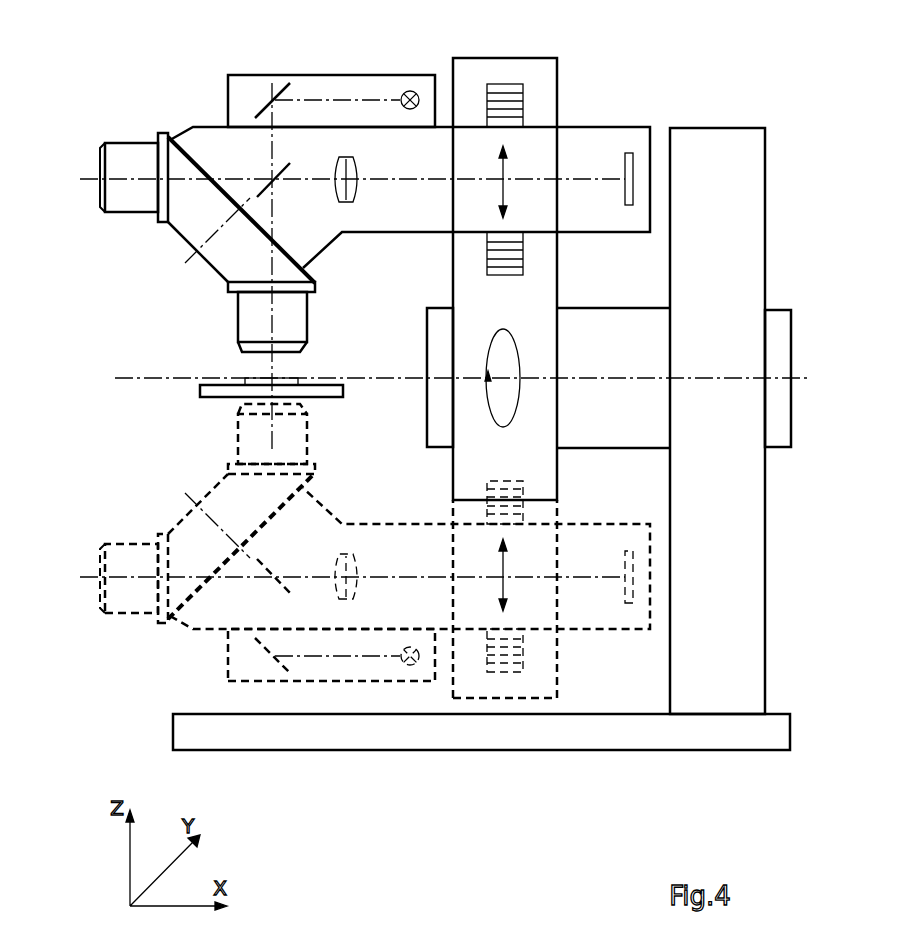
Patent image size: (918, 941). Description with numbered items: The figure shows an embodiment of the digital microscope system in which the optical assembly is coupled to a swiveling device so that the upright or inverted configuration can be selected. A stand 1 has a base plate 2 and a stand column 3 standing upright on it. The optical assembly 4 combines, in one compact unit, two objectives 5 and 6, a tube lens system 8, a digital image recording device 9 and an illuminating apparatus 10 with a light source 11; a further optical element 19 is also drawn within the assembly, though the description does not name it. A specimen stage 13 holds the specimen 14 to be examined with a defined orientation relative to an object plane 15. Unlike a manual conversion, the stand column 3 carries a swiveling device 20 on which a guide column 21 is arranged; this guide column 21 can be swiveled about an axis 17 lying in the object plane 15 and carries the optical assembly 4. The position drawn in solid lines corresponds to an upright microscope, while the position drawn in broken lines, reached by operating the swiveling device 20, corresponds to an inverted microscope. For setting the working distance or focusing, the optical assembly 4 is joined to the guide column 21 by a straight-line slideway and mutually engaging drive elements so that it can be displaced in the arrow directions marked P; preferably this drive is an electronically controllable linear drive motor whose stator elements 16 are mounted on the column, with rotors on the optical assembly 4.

The stand 1 is at (751, 366).
The base plate 2 is at (188, 723).
The stand column 3 is at (746, 486).
The optical assembly 4 is at (365, 314).
The objective 5 is at (295, 310).
The objective 6 is at (130, 155).
The tube lens system 8 is at (358, 170).
The digital image recording device 9 is at (630, 155).
The illuminating apparatus 10 is at (252, 83).
The light source 11 is at (402, 90).
The specimen stage 13 is at (312, 394).
The specimen 14 is at (255, 378).
The object plane 15 is at (137, 362).
The stator elements 16 is at (512, 262).
The axis 17 is at (377, 378).
The beam splitter 19 is at (268, 182).
The swiveling device 20 is at (612, 428).
The guide column 21 is at (533, 65).